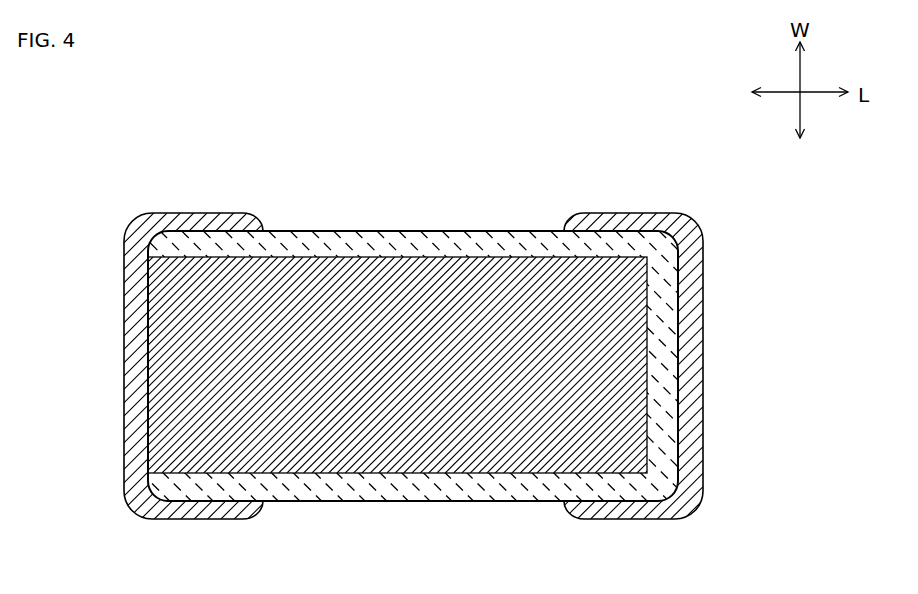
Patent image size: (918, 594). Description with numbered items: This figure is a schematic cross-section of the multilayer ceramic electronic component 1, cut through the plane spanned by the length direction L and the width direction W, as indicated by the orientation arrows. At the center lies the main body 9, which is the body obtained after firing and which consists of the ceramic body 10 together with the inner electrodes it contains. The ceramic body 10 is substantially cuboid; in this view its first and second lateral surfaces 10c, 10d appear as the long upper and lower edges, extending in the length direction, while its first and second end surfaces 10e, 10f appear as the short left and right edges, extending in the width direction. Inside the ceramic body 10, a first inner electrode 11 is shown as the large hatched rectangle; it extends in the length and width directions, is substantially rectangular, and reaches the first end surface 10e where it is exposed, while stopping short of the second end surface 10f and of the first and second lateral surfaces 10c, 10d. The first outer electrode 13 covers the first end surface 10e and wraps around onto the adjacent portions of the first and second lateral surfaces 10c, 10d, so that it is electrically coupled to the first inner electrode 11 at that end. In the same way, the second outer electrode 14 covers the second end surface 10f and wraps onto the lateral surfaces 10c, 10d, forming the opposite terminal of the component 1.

The multilayer ceramic electronic component 1 is at (459, 349).
The main body 9 is at (459, 353).
The ceramic body 10 is at (459, 363).
The first lateral surface 10c is at (472, 230).
The second lateral surface 10d is at (472, 502).
The first end surface 10e is at (147, 357).
The second end surface 10f is at (679, 362).
The first inner electrodes 11 is at (361, 256).
The first outer electrode 13 is at (121, 414).
The second outer electrode 14 is at (709, 416).